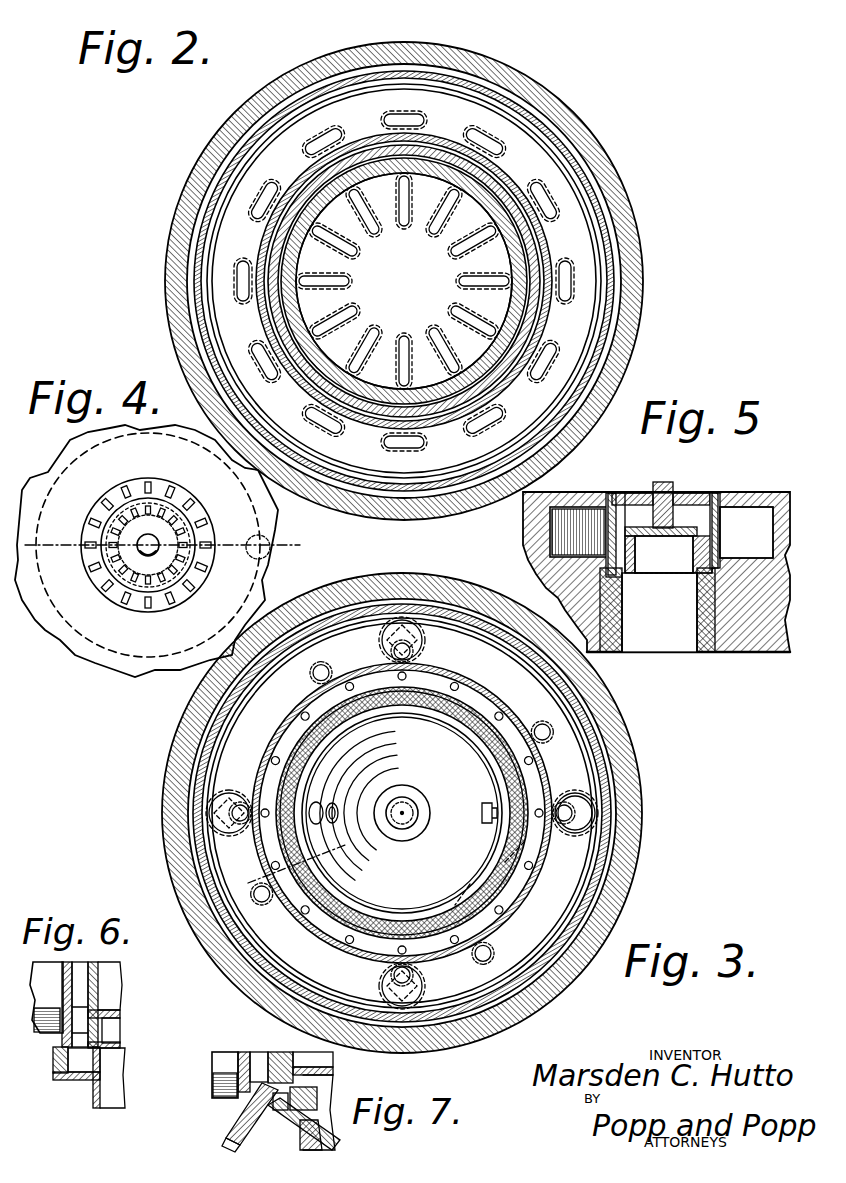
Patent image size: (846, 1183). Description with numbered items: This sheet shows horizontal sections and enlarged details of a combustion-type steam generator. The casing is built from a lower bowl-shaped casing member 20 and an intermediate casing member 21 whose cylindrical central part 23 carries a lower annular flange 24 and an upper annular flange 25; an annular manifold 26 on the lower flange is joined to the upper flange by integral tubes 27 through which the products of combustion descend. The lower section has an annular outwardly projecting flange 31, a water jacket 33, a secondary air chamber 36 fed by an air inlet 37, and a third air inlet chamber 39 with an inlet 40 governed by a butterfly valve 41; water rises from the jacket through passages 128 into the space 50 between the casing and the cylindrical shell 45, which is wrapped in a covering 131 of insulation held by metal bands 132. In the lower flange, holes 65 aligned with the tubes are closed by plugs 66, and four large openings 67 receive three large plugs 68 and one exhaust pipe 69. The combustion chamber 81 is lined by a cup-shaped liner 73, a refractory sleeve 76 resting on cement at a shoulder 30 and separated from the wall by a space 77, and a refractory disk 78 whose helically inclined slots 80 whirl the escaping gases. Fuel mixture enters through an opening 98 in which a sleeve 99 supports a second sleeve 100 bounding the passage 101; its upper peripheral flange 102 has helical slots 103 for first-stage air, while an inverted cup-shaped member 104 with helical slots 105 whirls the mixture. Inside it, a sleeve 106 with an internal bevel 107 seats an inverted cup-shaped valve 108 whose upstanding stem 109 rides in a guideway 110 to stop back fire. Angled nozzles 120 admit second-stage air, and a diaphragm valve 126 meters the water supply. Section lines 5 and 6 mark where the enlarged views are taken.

In FIG. 4, the section line 5 is at (293, 554).
In FIG. 3, the section line 6— 6 is at (242, 882).
In FIG. 5, the lower bowl-shaped casing member 20 is at (773, 663).
In FIG. 6, the lower bowl-shaped casing member 20 is at (103, 1118).
In FIG. 7, the lower bowl-shaped casing member 20 is at (232, 1101).
In FIG. 2, the intermediate casing member 21 is at (596, 243).
In FIG. 3, the intermediate casing member 21 is at (556, 942).
In FIG. 6, the intermediate casing member 21 is at (104, 968).
In FIG. 7, the intermediate casing member 21 is at (247, 1047).
In FIG. 2, the central part of cylindrical form 23 is at (302, 284).
In FIG. 3, the central part of cylindrical form 23 is at (360, 944).
In FIG. 6, the central part of cylindrical form 23 is at (112, 975).
In FIG. 7, the central part of cylindrical form 23 is at (277, 1054).
In FIG. 3, the lower annular flange 24 is at (608, 855).
In FIG. 7, the lower annular flange 24 is at (212, 1083).
In FIG. 2, the upper annular flange 25 is at (538, 316).
In FIG. 2, the annular manifold 26 is at (380, 132).
In FIG. 3, the annular manifold 26 is at (306, 927).
In FIG. 6, the annular manifold 26 is at (46, 997).
In FIG. 7, the annular manifold 26 is at (214, 1060).
In FIG. 2, the integral tubes 27 is at (467, 428).
In FIG. 6, the shoulder 30 is at (122, 1013).
In FIG. 7, the shoulder 30 is at (322, 1060).
In FIG. 6, the annular outwardly projecting flange 31 is at (54, 1050).
In FIG. 7, the annular outwardly projecting flange 31 is at (243, 1113).
In FIG. 6, the water jacket 33 is at (76, 1082).
In FIG. 7, the water jacket 33 is at (322, 1141).
In FIG. 5, the secondary air chamber 36 is at (746, 532).
In FIG. 6, the secondary air chamber 36 is at (122, 1031).
In FIG. 5, the air inlet 37 is at (745, 610).
In FIG. 7, the third air inlet chamber 39 is at (233, 1052).
In FIG. 7, the inlet 40 is at (232, 1122).
In FIG. 7, the butterfly valve 41 is at (238, 1139).
In FIG. 2, the cylindrical shell 45 is at (619, 304).
In FIG. 3, the cylindrical shell 45 is at (615, 783).
In FIG. 2, the space 50 is at (604, 340).
In FIG. 3, the space 50 is at (589, 909).
In FIG. 6, the space 50 is at (67, 965).
In FIG. 3, the holes 65 is at (542, 721).
In FIG. 3, the plug 66 is at (315, 676).
In FIG. 3, the large openings 67 is at (239, 794).
In FIG. 3, the large plugs 68 is at (426, 642).
In FIG. 3, the exhaust pipe 69 is at (575, 793).
In FIG. 3, the cup-shaped liner 73 is at (409, 829).
In FIG. 4, the cup-shaped liner 73 is at (99, 666).
In FIG. 2, the sleeve of refractory material 76 is at (486, 364).
In FIG. 3, the sleeve of refractory material 76 is at (327, 784).
In FIG. 2, the space 77 is at (320, 374).
In FIG. 3, the space 77 is at (494, 748).
In FIG. 2, the disk of refractory material 78 is at (404, 281).
In FIG. 2, the slots or holes 80 is at (357, 234).
In FIG. 2, the combustion chamber 81 is at (394, 238).
In FIG. 3, the combustion chamber 81 is at (402, 813).
In FIG. 6, the combustion chamber 81 is at (122, 966).
In FIG. 7, the combustion chamber 81 is at (314, 1054).
In FIG. 4, the opening 98 is at (196, 580).
In FIG. 5, the opening 98 is at (729, 655).
In FIG. 5, the sleeve 99 is at (618, 655).
In FIG. 4, the second sleeve 100 is at (156, 606).
In FIG. 5, the second sleeve 100 is at (728, 516).
In FIG. 5, the passage 101 is at (692, 512).
In FIG. 4, the upper peripheral flange 102 is at (116, 602).
In FIG. 5, the upper peripheral flange 102 is at (724, 502).
In FIG. 4, the slots 103 is at (190, 514).
In FIG. 5, the slots 103 is at (602, 505).
In FIG. 4, the inverted cylindrical cup-shaped member 104 is at (153, 537).
In FIG. 5, the inverted cylindrical cup-shaped member 104 is at (650, 496).
In FIG. 4, the helical slots 105 is at (126, 500).
In FIG. 5, the helical slots 105 is at (628, 496).
In FIG. 5, the sleeve 106 is at (632, 622).
In FIG. 5, the internal bevel 107 is at (647, 578).
In FIG. 5, the valve 108 is at (657, 542).
In FIG. 4, the upstanding stem 109 is at (187, 535).
In FIG. 5, the upstanding stem 109 is at (657, 526).
In FIG. 4, the guideway 110 is at (97, 566).
In FIG. 5, the guideway 110 is at (675, 491).
In FIG. 7, the nozzles 120 is at (352, 1080).
In FIG. 3, the diaphragm valve 126 is at (505, 862).
In FIG. 6, the passages 128 is at (102, 1060).
In FIG. 7, the passages 128 is at (189, 1071).
In FIG. 2, the covering of insulating material 131 is at (624, 239).
In FIG. 3, the covering of insulating material 131 is at (531, 1021).
In FIG. 3, the metal bands 132 is at (174, 852).